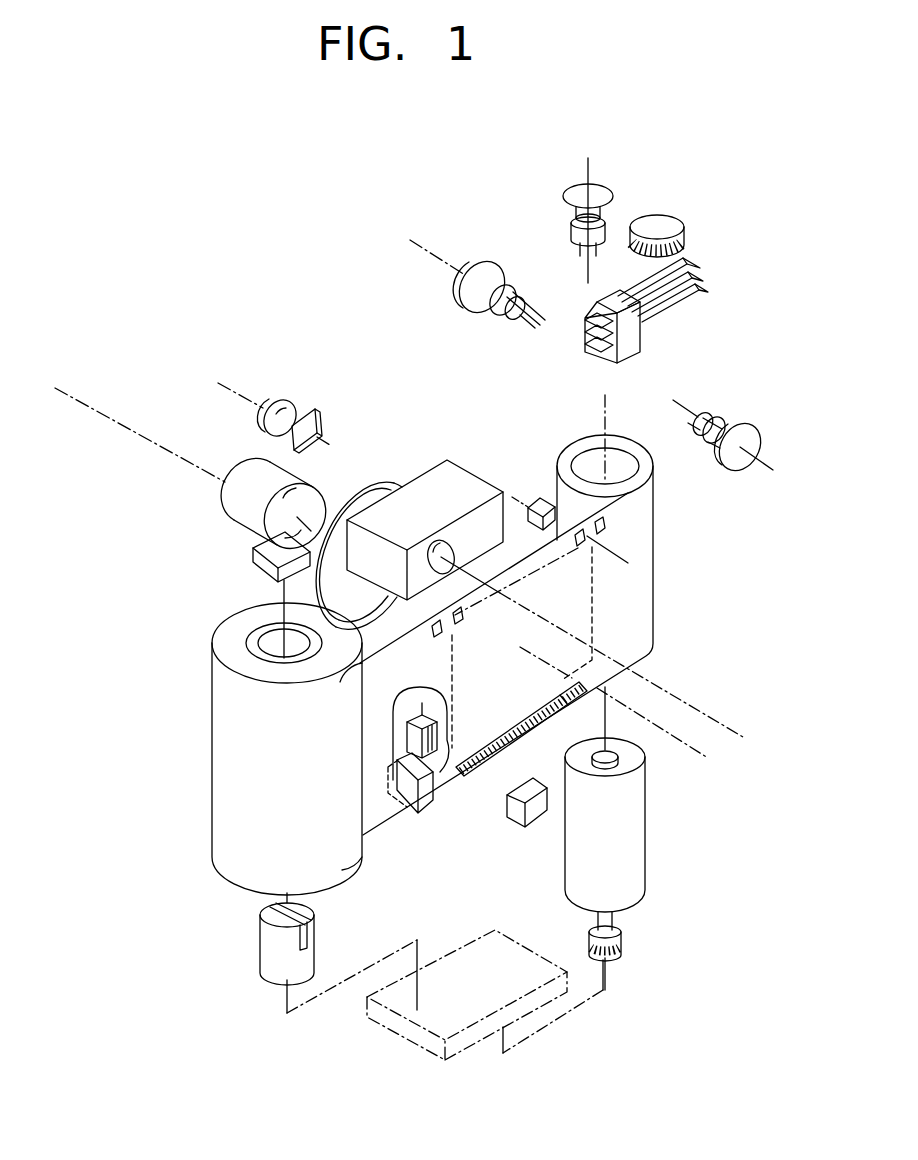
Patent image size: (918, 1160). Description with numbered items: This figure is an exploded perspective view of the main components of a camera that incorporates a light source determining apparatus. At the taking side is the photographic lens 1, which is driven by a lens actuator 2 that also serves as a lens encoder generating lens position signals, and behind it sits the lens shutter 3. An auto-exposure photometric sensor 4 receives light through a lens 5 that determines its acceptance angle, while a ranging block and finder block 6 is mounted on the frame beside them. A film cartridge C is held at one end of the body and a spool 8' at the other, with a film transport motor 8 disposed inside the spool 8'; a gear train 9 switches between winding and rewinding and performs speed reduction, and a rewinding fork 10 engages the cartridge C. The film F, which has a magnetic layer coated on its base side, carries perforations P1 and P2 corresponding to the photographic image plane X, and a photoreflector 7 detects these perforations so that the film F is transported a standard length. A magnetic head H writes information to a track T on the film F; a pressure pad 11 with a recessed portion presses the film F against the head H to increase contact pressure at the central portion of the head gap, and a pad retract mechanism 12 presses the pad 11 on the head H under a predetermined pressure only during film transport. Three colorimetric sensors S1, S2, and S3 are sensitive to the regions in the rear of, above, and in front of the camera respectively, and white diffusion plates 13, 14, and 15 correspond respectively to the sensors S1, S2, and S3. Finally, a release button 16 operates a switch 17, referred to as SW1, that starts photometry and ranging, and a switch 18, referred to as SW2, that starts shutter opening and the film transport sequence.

The photographic lens 1 is at (227, 527).
The lens actuator and lens encoder 2 is at (267, 573).
The lens shutter 3 is at (365, 482).
The auto-exposure photometric sensor 4 is at (323, 413).
The lens 5 is at (288, 398).
The ranging block and finder block 6 is at (463, 460).
The photoreflector 7 is at (540, 497).
The film transport motor 8 is at (630, 838).
The spool 8' is at (614, 467).
The gear train 9 is at (467, 1047).
The rewinding fork 10 is at (265, 955).
The pressure pad 11 is at (410, 747).
The pad retract mechanism 12 is at (427, 807).
The white diffusion plate 13 is at (757, 428).
The white diffusion plate 14 is at (572, 190).
The white diffusion plate 15 is at (487, 262).
The release button 16 is at (680, 213).
The switch (SW1) 17 is at (690, 276).
The switch (SW2) 18 is at (690, 304).
The colorimetric sensor S1 is at (716, 408).
The colorimetric sensor S2 is at (571, 239).
The colorimetric sensor S3 is at (505, 320).
The perforation P1 is at (583, 547).
The perforation P2 is at (458, 622).
The film F is at (643, 640).
The photographic image plane X is at (492, 720).
The track T is at (533, 728).
The film cartridge C is at (227, 793).
The magnetic head H is at (517, 817).